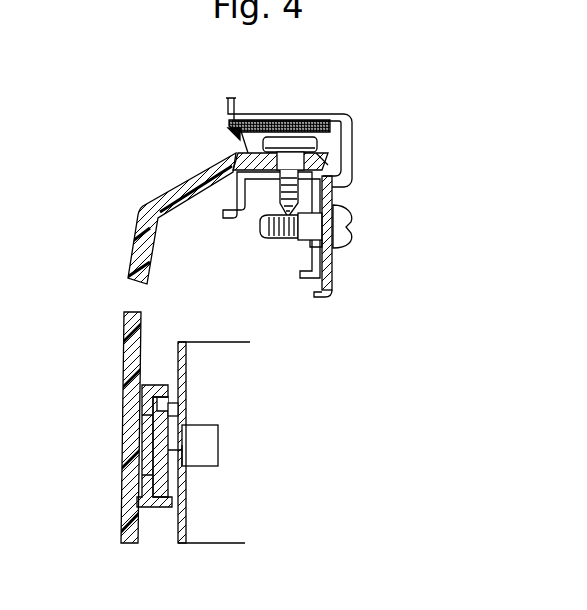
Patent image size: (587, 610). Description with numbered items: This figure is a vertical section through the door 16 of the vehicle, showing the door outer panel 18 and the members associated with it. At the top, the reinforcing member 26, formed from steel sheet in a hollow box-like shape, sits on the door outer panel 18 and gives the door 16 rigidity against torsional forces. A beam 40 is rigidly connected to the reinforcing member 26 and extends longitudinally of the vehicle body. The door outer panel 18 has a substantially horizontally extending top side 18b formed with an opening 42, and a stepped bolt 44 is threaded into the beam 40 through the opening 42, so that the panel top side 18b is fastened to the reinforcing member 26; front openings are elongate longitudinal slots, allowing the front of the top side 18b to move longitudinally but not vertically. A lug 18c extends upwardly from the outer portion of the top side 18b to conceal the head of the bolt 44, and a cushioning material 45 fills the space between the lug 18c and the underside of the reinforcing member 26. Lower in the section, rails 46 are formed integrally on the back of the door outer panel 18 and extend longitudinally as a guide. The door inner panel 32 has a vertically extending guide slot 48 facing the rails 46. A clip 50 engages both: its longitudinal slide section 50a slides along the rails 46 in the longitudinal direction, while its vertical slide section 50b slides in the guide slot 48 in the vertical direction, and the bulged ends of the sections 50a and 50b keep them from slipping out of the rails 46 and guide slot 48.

The door 16 is at (148, 155).
The door outer panel 18 is at (125, 362).
The panel top side 18b is at (238, 147).
The lug 18c is at (237, 137).
The reinforcing member 26 is at (346, 116).
The door inner panel 32 is at (180, 523).
The beam 40 is at (229, 220).
The opening 42 is at (301, 152).
The stepped bolt 44 is at (280, 141).
The cushioning material 45 is at (249, 131).
The rails 46 is at (160, 468).
The guide slot 48 is at (183, 416).
The clip 50 is at (218, 432).
The longitudinal slide section 50a is at (150, 441).
The vertical slide section 50b is at (186, 452).